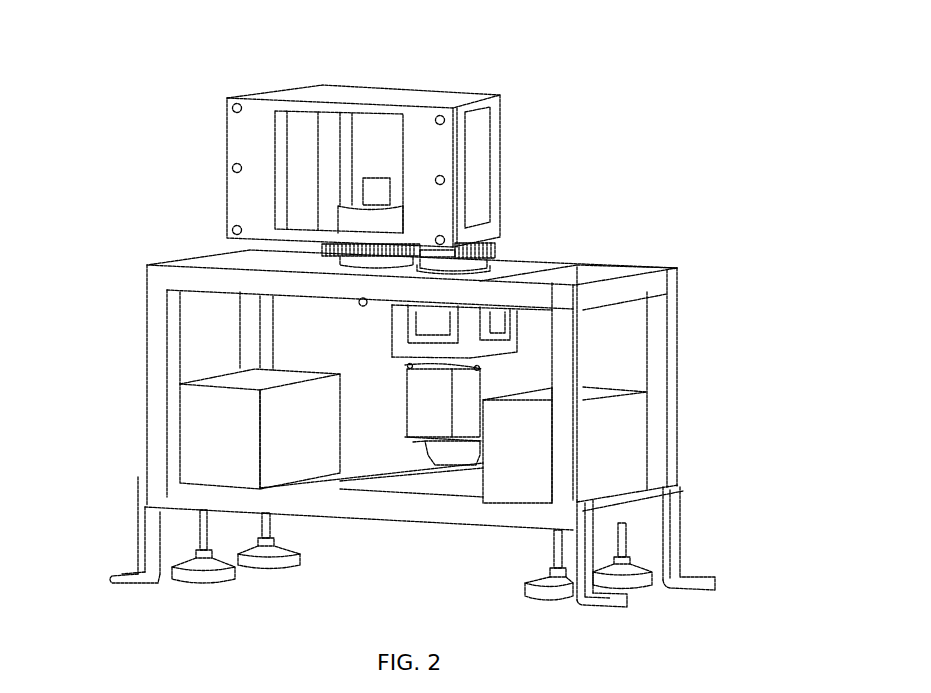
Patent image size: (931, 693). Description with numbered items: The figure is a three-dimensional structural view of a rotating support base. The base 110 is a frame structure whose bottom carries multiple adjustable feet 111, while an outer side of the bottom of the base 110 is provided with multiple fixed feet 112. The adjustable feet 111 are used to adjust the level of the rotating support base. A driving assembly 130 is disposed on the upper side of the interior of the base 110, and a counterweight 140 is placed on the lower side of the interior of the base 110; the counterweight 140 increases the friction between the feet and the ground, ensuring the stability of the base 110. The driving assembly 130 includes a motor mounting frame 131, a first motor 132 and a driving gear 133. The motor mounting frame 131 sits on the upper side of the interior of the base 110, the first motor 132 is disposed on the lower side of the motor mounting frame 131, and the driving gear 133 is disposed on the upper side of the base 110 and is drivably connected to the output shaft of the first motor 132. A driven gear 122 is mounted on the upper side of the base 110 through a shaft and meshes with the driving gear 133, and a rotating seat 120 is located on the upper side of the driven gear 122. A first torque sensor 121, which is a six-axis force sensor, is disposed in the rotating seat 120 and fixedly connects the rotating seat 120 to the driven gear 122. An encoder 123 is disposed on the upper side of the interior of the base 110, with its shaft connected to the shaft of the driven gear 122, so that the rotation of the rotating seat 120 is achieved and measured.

The base 110 is at (752, 433).
The adjustable feet 111 is at (623, 541).
The fixed feet 112 is at (754, 542).
The rotating seat 120 is at (433, 97).
The first torque sensor 121 is at (330, 185).
The driven gear 122 is at (365, 213).
The encoder 123 is at (360, 299).
The driving assembly 130 is at (453, 450).
The motor mounting frame 131 is at (515, 335).
The first motor 132 is at (490, 387).
The driving gear 133 is at (500, 240).
The counterweight 140 is at (230, 437).